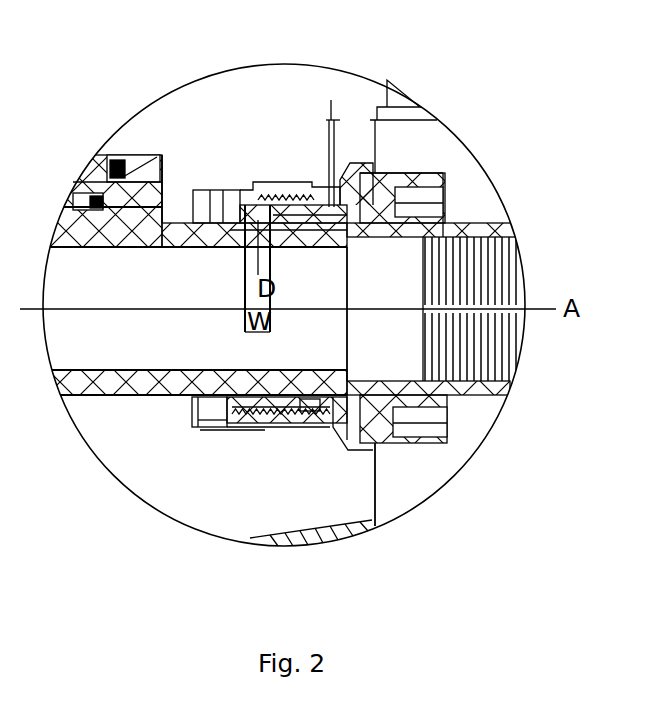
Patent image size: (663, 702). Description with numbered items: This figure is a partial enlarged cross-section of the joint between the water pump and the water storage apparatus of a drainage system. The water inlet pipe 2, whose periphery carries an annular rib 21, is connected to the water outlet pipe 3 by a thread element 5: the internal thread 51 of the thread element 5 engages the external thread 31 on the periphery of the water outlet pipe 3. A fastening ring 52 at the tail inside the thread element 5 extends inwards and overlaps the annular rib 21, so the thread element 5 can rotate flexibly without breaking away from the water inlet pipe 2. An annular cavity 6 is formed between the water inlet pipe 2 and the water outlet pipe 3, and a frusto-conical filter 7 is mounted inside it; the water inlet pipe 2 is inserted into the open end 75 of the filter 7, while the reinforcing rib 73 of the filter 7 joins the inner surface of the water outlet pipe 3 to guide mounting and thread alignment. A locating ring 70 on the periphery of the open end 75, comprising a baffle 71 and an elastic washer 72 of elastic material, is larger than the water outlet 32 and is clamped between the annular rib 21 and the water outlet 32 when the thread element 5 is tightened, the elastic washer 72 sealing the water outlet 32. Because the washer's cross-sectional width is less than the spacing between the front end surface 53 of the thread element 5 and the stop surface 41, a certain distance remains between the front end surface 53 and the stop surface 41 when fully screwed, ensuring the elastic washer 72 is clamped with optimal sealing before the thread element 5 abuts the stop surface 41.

The water inlet pipe 2 is at (128, 396).
The water outlet pipe 3 is at (398, 180).
The thread element 5 is at (197, 190).
The annular cavity 6 is at (437, 410).
The filter 7 is at (383, 280).
The annular rib 21 is at (238, 192).
The external thread 31 is at (290, 400).
The water outlet 32 is at (266, 400).
The stop surface 41 is at (377, 452).
The internal thread 51 is at (232, 190).
The fastening ring 52 is at (213, 190).
The front end surface 53 is at (333, 427).
The locating ring 70 is at (257, 400).
The baffle 71 is at (230, 430).
The elastic washer 72 is at (263, 400).
The reinforcing rib 73 is at (468, 305).
The open end 75 is at (222, 400).